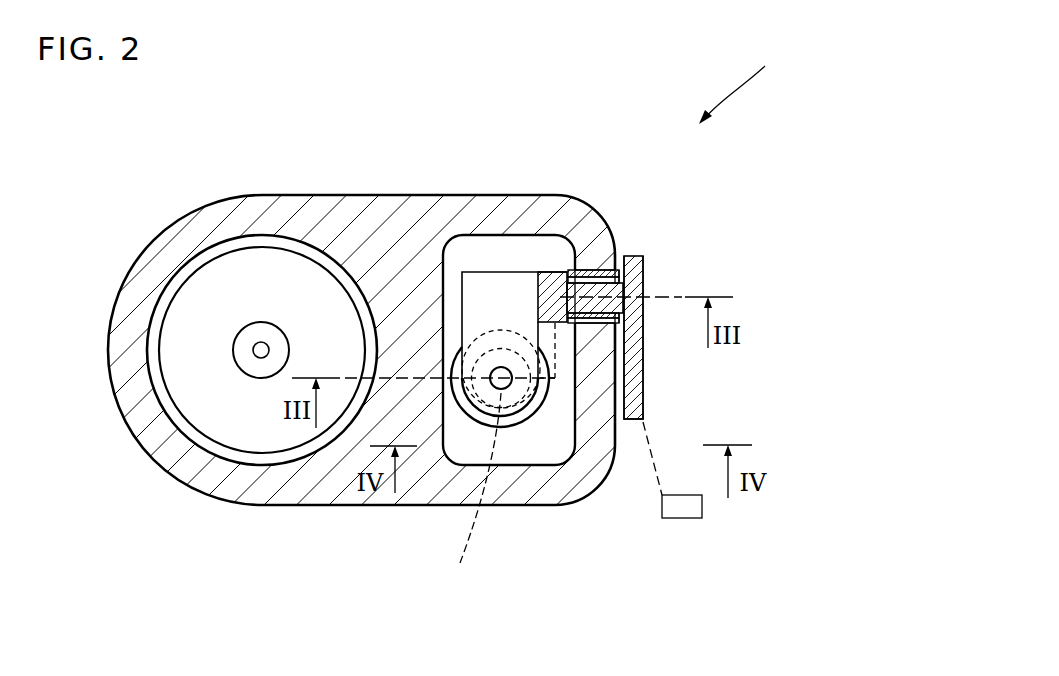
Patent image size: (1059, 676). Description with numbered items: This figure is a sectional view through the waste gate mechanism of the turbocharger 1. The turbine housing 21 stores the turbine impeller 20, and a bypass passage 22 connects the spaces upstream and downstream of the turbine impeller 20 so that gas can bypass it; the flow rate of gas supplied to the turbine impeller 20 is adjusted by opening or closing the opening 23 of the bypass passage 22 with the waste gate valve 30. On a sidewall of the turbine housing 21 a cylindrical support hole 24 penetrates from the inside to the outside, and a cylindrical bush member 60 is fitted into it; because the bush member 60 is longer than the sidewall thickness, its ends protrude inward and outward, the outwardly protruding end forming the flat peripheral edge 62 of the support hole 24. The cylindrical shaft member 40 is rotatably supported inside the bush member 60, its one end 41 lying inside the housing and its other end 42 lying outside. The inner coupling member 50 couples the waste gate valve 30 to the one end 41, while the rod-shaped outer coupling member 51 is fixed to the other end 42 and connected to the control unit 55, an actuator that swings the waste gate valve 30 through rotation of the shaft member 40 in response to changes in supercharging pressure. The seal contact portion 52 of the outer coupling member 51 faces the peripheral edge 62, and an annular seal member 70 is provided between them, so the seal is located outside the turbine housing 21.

The turbocharger 1 is at (738, 80).
The turbine impeller 20 is at (203, 312).
The turbine housing 21 is at (393, 207).
The bypass passage 22 is at (505, 455).
The opening 23 is at (450, 480).
The support hole 24 is at (590, 270).
The waste gate valve 30 is at (458, 392).
The shaft member 40 is at (588, 300).
The one end of the shaft member 41 is at (542, 290).
The other end of the shaft member 42 is at (625, 290).
The inner coupling member 50 is at (493, 287).
The outer coupling member 51 is at (632, 415).
The seal contact portion 52 is at (626, 268).
The control unit 55 is at (684, 510).
The bush member 60 is at (582, 272).
The peripheral edge 62 is at (615, 275).
The seal member 70 is at (620, 270).